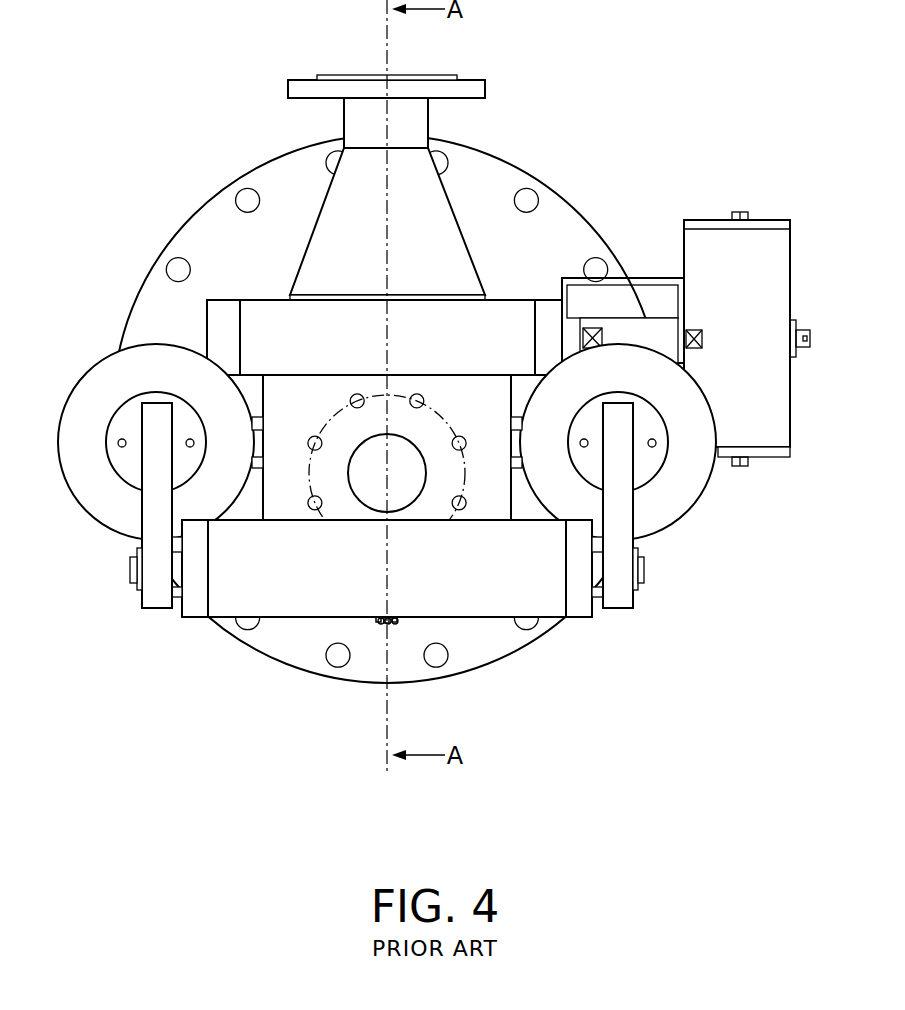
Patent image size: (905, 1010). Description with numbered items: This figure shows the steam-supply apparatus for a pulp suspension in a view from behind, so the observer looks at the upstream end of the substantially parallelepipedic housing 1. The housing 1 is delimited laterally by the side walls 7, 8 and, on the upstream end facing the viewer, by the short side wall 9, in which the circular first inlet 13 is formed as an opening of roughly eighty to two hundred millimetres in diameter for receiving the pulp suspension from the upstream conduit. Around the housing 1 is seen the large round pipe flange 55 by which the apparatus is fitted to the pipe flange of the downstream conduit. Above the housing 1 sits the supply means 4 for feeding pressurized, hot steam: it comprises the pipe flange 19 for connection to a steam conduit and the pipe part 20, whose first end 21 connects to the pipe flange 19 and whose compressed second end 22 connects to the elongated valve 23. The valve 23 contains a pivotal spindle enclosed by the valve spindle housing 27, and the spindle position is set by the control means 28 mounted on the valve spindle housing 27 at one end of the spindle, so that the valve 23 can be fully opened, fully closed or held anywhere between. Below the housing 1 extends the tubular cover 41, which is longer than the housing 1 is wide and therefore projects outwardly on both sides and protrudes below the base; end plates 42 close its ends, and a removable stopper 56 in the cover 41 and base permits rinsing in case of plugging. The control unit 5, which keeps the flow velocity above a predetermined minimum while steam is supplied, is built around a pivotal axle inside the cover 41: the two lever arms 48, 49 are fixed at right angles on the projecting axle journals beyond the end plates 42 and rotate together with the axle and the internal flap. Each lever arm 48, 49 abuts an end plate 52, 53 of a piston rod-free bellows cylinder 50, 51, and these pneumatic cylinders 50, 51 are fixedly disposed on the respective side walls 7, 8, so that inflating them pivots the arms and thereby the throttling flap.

The housing 1 is at (514, 296).
The supply means 4 is at (421, 375).
The control unit 5 is at (386, 525).
The side wall 7 is at (544, 310).
The side wall 8 is at (215, 315).
The short side wall 9 is at (387, 525).
The first inlet 13 is at (368, 452).
The pipe flange 19 is at (312, 89).
The pipe part 20 is at (440, 207).
The first end 21 is at (453, 98).
The second end 22 is at (324, 304).
The valve 23 is at (196, 336).
The valve spindle housing 27 is at (253, 308).
The control means 28 is at (766, 272).
The tubular cover 41 is at (386, 613).
The end plates 42 is at (195, 613).
The lever arm 48 is at (622, 522).
The lever arm 49 is at (150, 518).
The bellows cylinder 50 is at (646, 442).
The bellows cylinder 51 is at (127, 442).
The end plate 52 is at (633, 472).
The end plate 53 is at (125, 420).
The pipe flange 55 is at (280, 170).
The stopper 56 is at (378, 622).